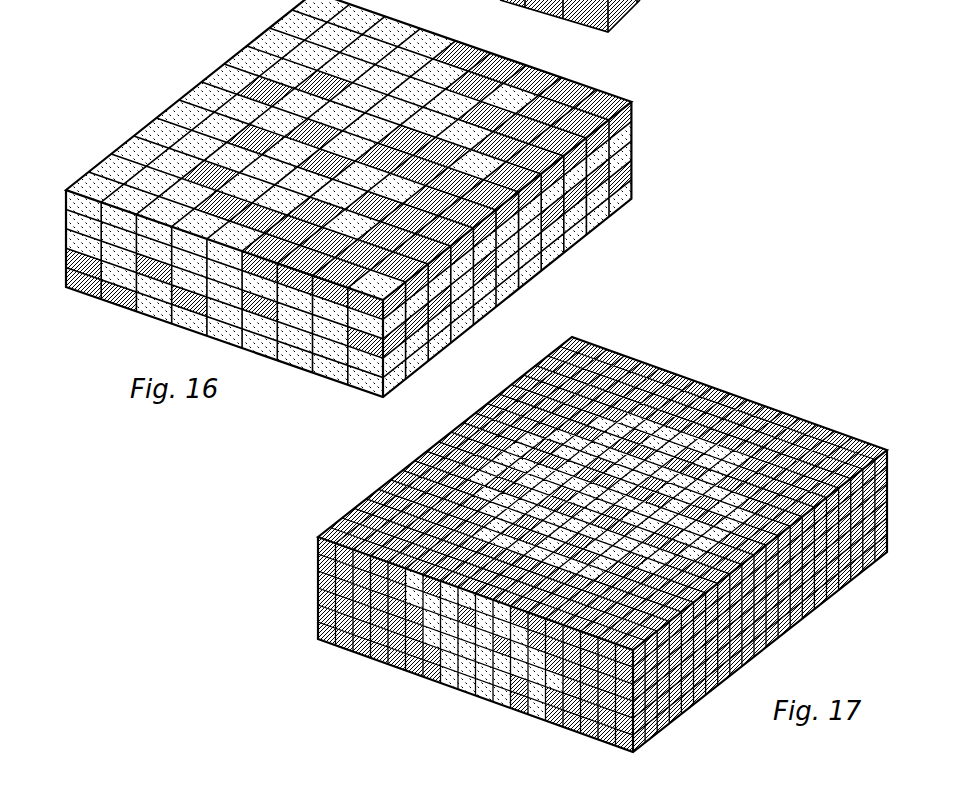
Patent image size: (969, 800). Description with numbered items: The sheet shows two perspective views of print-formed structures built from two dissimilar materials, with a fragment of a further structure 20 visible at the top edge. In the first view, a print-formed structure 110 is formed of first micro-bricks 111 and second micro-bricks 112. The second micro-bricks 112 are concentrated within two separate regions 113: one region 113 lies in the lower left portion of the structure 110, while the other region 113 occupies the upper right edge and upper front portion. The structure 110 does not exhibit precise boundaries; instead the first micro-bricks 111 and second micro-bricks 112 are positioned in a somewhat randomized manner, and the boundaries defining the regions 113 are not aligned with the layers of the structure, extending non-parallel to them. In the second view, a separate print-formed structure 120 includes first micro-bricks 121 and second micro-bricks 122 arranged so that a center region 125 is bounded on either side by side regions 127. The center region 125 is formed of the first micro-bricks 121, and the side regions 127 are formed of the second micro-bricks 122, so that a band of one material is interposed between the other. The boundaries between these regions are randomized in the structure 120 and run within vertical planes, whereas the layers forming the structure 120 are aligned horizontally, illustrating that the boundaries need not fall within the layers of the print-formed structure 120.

In FIG. 16, the absorbent article / block 20 is at (647, 0).
In FIG. 16, the print-formed structure 110 is at (655, 128).
In FIG. 16, the first micro-bricks 111 is at (230, 73).
In FIG. 16, the second micro-bricks 112 is at (570, 86).
In FIG. 16, the regions 113 is at (573, 150).
In FIG. 17, the print-formed structure 120 is at (716, 356).
In FIG. 17, the first micro-bricks 121 is at (752, 402).
In FIG. 17, the second micro-bricks 122 is at (590, 362).
In FIG. 17, the center region 125 is at (470, 700).
In FIG. 17, the side regions 127 is at (856, 432).